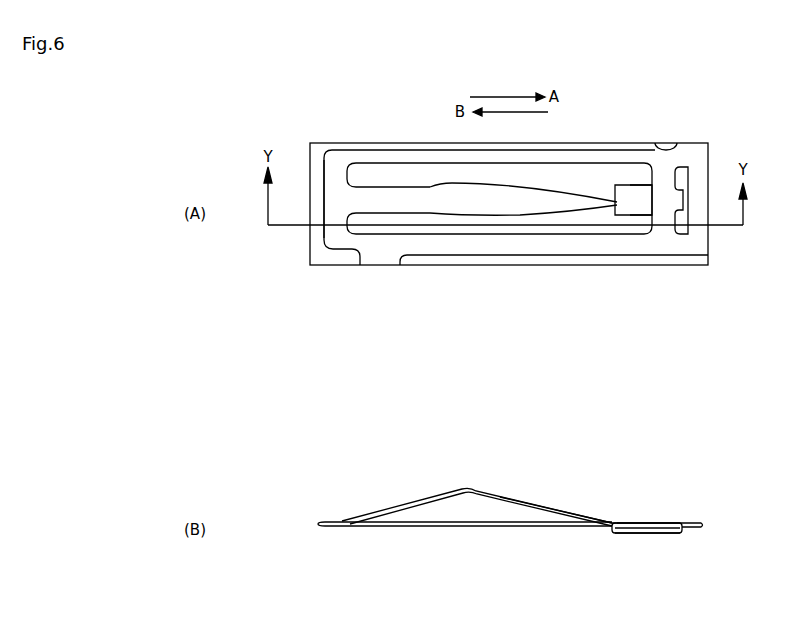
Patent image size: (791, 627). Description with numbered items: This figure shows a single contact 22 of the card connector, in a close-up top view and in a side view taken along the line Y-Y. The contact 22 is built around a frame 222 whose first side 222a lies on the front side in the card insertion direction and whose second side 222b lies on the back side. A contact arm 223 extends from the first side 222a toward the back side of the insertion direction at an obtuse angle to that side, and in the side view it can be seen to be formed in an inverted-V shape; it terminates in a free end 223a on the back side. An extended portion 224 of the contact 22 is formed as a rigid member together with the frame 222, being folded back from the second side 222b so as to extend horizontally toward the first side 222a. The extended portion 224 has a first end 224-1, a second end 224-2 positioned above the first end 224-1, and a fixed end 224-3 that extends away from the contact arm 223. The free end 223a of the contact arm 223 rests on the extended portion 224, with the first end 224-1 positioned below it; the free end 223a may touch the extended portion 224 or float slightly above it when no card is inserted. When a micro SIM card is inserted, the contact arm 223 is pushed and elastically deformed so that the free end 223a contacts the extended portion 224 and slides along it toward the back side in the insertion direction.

The contact 22 is at (685, 298).
The frame 222 is at (413, 243).
The first side 222a is at (333, 195).
The second side 222b is at (673, 203).
The contact arm 223 is at (443, 203).
The free end 223a is at (627, 200).
The extended portion 224 is at (637, 203).
The first end 224-1 is at (612, 533).
The second end 224-2 is at (653, 523).
The fixed end 224-3 is at (682, 535).